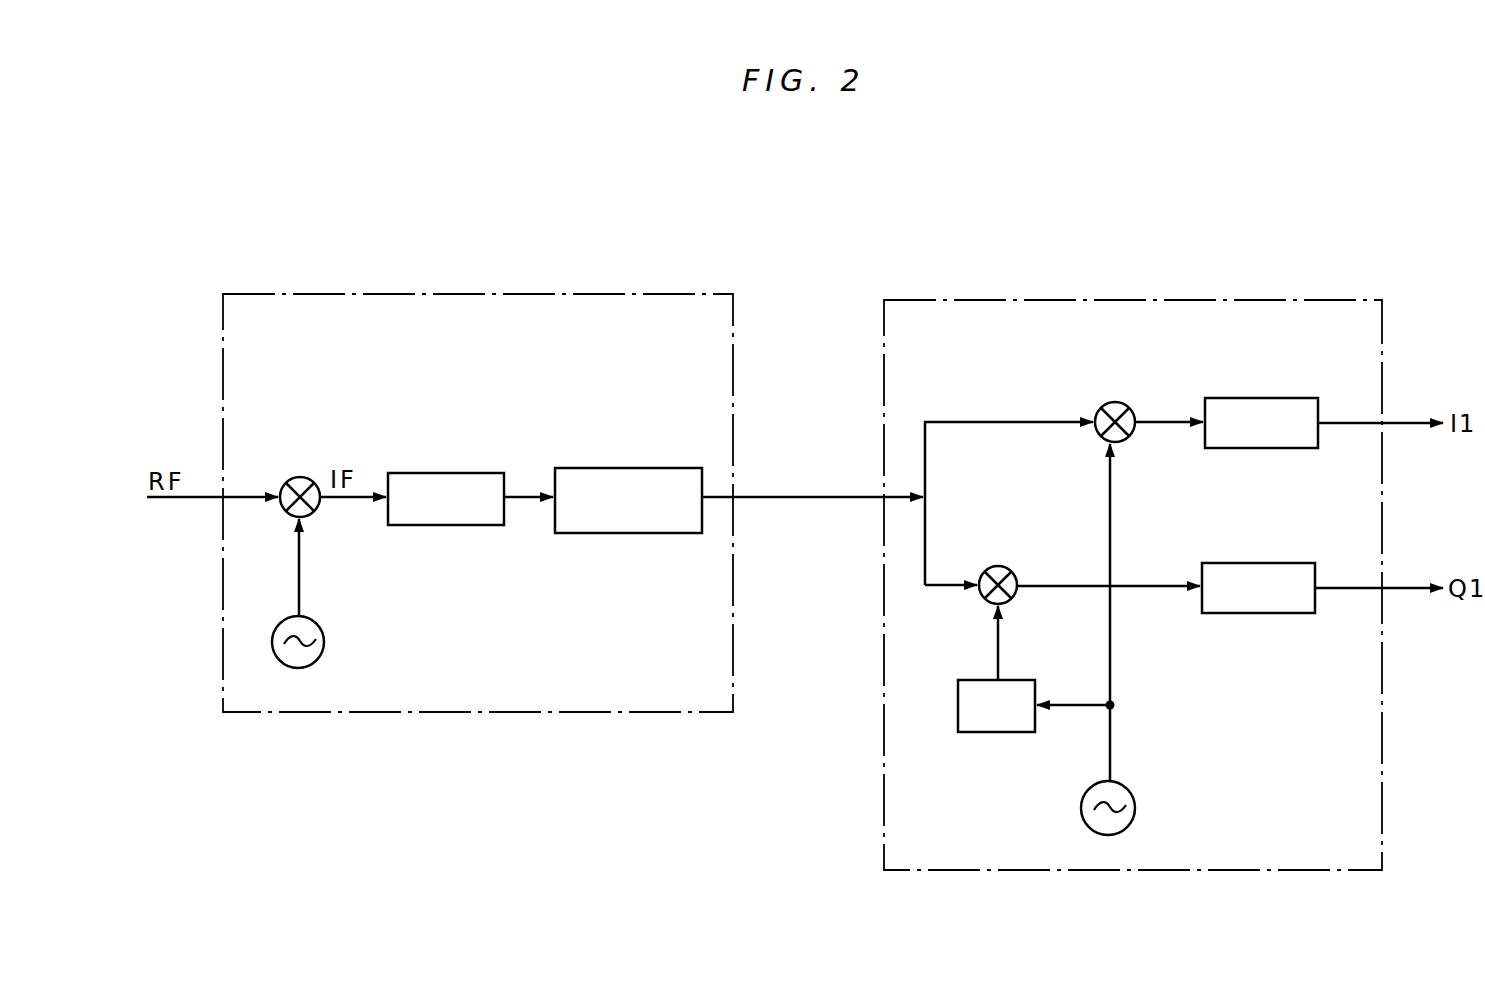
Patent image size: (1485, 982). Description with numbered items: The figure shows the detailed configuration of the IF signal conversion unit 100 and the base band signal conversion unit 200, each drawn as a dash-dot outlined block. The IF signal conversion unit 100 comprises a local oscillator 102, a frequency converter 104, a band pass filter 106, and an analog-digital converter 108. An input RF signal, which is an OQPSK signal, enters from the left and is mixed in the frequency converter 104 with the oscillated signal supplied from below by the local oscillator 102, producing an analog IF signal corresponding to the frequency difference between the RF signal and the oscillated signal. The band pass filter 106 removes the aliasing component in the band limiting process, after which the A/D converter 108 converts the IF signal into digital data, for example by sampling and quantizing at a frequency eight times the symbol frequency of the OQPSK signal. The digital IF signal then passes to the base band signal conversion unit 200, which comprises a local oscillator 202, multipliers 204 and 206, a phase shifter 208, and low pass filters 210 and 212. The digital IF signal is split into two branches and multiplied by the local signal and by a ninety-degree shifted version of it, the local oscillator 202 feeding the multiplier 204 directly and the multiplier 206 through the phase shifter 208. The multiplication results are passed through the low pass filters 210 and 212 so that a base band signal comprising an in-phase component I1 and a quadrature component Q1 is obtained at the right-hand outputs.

The IF signal conversion unit 100 is at (680, 295).
The local oscillator 102 is at (324, 640).
The frequency converter 104 is at (302, 478).
The band pass filter 106 is at (470, 473).
The A/D converter 108 is at (613, 468).
The base band signal conversion unit 200 is at (1305, 300).
The local oscillator 202 is at (1130, 795).
The multiplier 204 is at (1104, 405).
The multiplier 206 is at (1005, 567).
The phase shifter 208 is at (1012, 680).
The low pass filter 210 is at (1268, 398).
The low pass filter 212 is at (1266, 563).